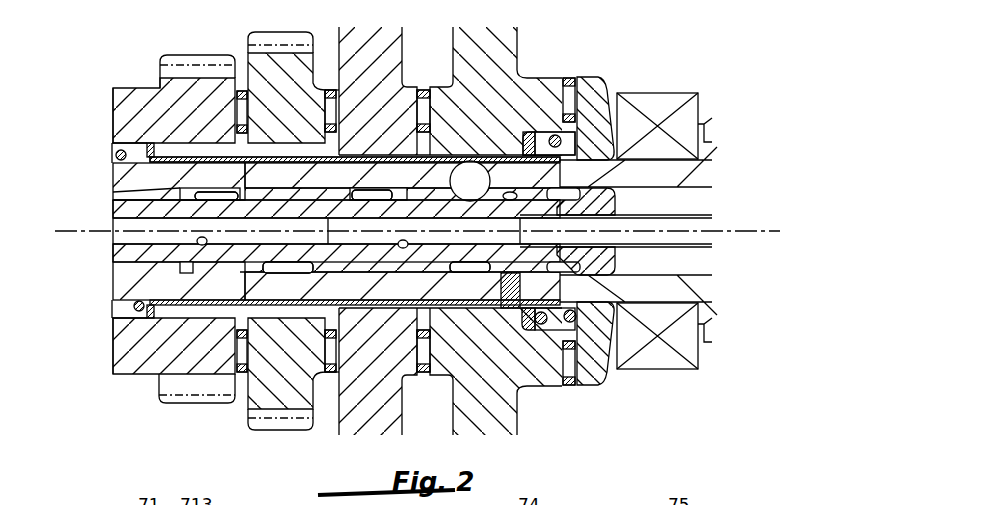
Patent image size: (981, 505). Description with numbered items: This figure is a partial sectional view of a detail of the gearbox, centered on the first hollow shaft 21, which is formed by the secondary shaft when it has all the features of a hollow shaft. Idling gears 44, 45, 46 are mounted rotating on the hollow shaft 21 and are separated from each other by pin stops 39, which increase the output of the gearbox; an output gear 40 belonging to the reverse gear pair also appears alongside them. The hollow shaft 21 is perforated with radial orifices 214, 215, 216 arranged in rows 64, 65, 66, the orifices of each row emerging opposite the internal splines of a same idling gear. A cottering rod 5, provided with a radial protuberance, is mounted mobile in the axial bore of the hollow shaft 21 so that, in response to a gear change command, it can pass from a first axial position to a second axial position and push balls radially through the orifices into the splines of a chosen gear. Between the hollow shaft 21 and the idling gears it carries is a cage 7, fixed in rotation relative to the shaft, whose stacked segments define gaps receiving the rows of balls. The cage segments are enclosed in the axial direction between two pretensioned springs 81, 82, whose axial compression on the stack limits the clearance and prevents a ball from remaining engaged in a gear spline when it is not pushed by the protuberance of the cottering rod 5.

The cottering rod 5 is at (113, 202).
The cage 7 is at (437, 157).
The first hollow shaft 21 is at (153, 287).
The pin stop 39 is at (243, 380).
The output gear 40 is at (488, 418).
The idling gear 44 is at (190, 400).
The idling gear 45 is at (280, 420).
The idling gear 46 is at (375, 405).
The row of orifices 64 is at (215, 283).
The row of orifices 65 is at (292, 164).
The row of orifices 66 is at (368, 283).
The pretensioned spring 81 is at (121, 151).
The pretensioned spring 82 is at (553, 137).
The radial orifice 214 is at (195, 285).
The radial orifice 215 is at (268, 268).
The radial orifice 216 is at (394, 190).